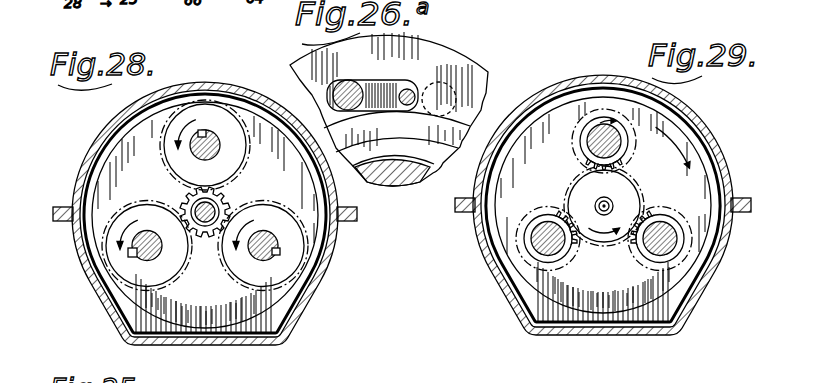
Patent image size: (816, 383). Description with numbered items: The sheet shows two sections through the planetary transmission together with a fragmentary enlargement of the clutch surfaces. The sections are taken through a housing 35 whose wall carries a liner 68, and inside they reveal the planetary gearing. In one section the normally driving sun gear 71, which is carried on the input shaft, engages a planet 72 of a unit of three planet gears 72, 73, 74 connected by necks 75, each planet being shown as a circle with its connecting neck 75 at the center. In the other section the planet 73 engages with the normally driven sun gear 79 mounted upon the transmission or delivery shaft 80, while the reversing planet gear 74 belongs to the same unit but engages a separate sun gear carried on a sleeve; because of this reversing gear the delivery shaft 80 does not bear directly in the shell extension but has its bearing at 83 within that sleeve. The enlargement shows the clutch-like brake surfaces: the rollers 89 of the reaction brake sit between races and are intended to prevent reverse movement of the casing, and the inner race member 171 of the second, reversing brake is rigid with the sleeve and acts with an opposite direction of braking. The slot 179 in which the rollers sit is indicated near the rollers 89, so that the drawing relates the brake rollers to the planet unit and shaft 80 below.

In FIG. 28, the housing 35 is at (290, 330).
In FIG. 29, the housing 35 is at (688, 322).
In FIG. 28, the housing wall liner 68 is at (287, 299).
In FIG. 29, the housing wall liner 68 is at (711, 258).
In FIG. 28, the sun gear 71 is at (231, 204).
In FIG. 28, the planet gear 72 is at (247, 170).
In FIG. 28, the neck 75 is at (191, 150).
In FIG. 29, the neck 75 is at (556, 215).
In FIG. 29, the planet gear 73 is at (584, 163).
In FIG. 29, the reversing planet gear 74 is at (624, 128).
In FIG. 29, the sun gear 79 is at (641, 188).
In FIG. 26a, the roller 89 is at (328, 89).
In FIG. 26a, the ball slot 179 is at (413, 81).
In FIG. 26a, the inner race member 171 is at (425, 143).
In FIG. 26a, the bearing 83 is at (414, 174).
In FIG. 26a, the transmission or delivery shaft 80 is at (390, 187).